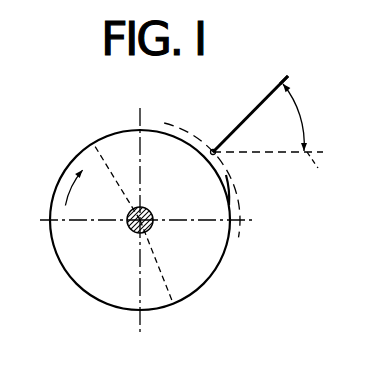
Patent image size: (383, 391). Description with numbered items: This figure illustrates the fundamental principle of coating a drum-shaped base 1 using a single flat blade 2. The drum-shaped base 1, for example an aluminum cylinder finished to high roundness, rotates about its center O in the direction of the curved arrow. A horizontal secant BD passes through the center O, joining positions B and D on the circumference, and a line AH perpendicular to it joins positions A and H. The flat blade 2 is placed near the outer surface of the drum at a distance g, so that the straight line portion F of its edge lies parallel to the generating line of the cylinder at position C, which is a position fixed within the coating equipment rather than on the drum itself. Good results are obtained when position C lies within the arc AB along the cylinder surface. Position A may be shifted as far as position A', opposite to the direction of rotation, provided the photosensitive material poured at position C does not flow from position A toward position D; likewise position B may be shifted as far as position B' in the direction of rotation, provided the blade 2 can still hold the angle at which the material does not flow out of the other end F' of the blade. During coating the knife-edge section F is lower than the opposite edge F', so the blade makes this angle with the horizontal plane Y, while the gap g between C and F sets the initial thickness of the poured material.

The drum-shaped base 1 is at (140, 228).
The flat blade 2 is at (247, 113).
The position A is at (140, 152).
The position H is at (137, 291).
The position D is at (80, 217).
The position B is at (205, 223).
The center of rotation O is at (132, 231).
The position A' is at (108, 166).
The position B' is at (164, 278).
The straight line portion of the blade edge F is at (205, 130).
The opposite edge of the blade F' is at (273, 64).
The coating position C is at (226, 189).
The gap g is at (253, 178).
The horizontal plane Y is at (315, 171).